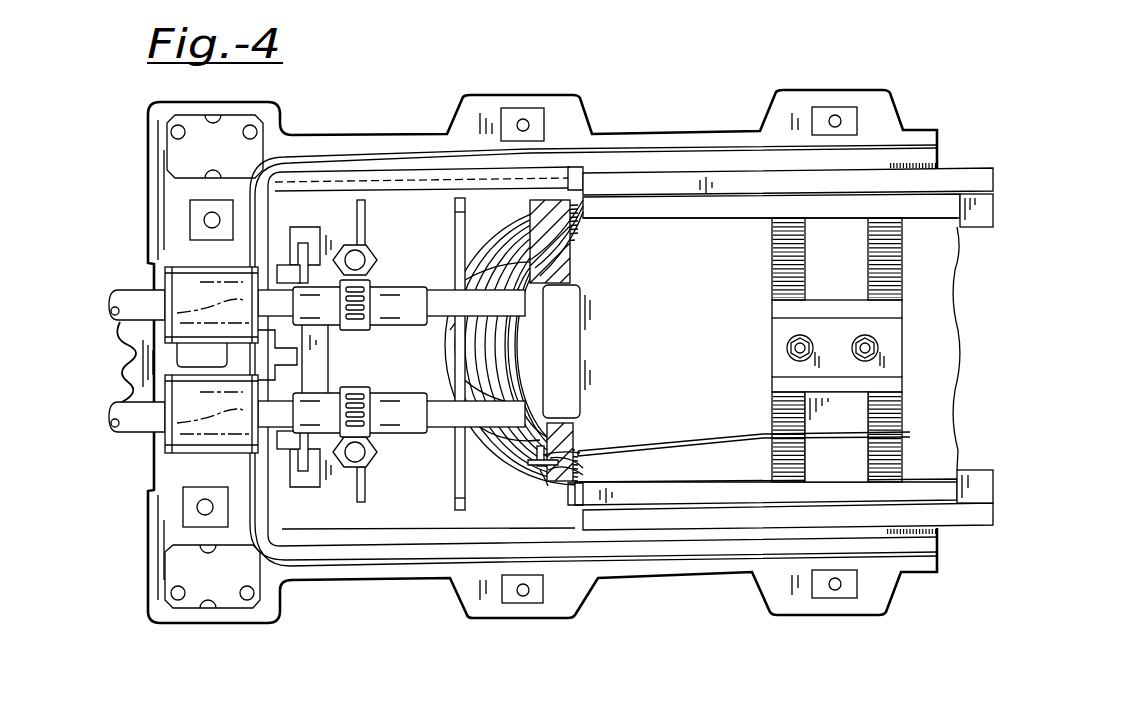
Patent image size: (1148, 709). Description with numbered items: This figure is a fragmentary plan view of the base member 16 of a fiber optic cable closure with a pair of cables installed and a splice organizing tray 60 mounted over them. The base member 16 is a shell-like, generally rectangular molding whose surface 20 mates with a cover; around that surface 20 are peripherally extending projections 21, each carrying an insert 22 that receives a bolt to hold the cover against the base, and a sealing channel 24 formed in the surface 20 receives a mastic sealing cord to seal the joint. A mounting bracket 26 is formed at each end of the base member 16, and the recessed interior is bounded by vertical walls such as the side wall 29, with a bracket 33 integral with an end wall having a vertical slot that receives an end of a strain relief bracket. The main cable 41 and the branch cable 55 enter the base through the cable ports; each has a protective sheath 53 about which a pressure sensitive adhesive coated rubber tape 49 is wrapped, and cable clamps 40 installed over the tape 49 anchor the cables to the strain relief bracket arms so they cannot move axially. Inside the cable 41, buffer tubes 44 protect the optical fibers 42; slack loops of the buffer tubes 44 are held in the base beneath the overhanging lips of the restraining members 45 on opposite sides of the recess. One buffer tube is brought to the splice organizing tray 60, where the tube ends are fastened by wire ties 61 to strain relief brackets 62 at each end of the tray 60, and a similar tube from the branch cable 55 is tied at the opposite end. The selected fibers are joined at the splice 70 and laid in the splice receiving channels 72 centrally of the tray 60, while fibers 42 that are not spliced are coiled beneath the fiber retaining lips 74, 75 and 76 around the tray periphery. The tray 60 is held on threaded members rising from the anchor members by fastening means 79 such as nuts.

The base member 16 is at (368, 586).
The surface of the base 20 is at (623, 133).
The peripherally extending projections 21 is at (515, 93).
The insert 22 is at (850, 110).
The sealing channel 24 is at (393, 136).
The mounting bracket 26 is at (118, 340).
The vertical side wall 29 is at (350, 543).
The bracket 33 is at (345, 232).
The cable clamps 40 is at (372, 250).
The cable 41 is at (138, 290).
The optical fibers 42 is at (600, 480).
The fiber optic buffer tubes 44 is at (573, 443).
The fiber optic cable restraining members 45 is at (690, 170).
The pressure sensitive adhesive coated rubber tape 49 is at (396, 326).
The protective sheath 53 is at (372, 288).
The branch cable 55 is at (138, 433).
The splice organizing tray 60 is at (680, 304).
The wire ties 61 is at (530, 468).
The strain relief brackets 62 is at (543, 470).
The splice 70 is at (810, 438).
The splice receiving channels 72 is at (777, 263).
The fiber retaining lip 74 is at (582, 350).
The fiber retaining lip 75 is at (663, 228).
The fiber retaining lip 76 is at (692, 470).
The fastening means 79 is at (787, 347).